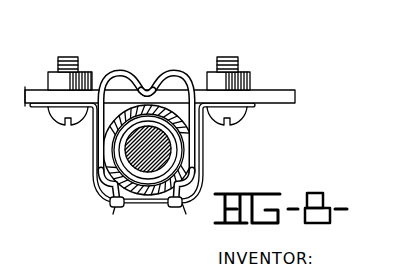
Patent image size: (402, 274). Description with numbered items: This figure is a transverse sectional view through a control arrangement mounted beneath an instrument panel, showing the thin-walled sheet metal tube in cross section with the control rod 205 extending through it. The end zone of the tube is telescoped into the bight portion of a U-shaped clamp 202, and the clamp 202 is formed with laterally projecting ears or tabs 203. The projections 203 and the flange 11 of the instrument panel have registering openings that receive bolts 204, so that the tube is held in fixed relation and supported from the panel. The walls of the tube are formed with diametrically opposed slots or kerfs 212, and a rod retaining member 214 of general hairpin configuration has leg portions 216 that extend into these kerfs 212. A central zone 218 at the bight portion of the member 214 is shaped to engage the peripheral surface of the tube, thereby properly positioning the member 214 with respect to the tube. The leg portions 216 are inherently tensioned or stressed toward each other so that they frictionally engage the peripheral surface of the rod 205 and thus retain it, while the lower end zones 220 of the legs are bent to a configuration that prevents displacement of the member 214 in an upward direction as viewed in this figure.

The flange 11 is at (282, 97).
The U-shaped clamp 202 is at (204, 177).
The laterally projecting ears 203 is at (45, 107).
The bolts 204 is at (83, 40).
The control rod 205 is at (104, 179).
The slots or kerfs 212 is at (103, 158).
The rod retaining member 214 is at (123, 73).
The leg portions 216 is at (113, 141).
The central zone 218 is at (144, 90).
The lower end zones 220 is at (181, 204).